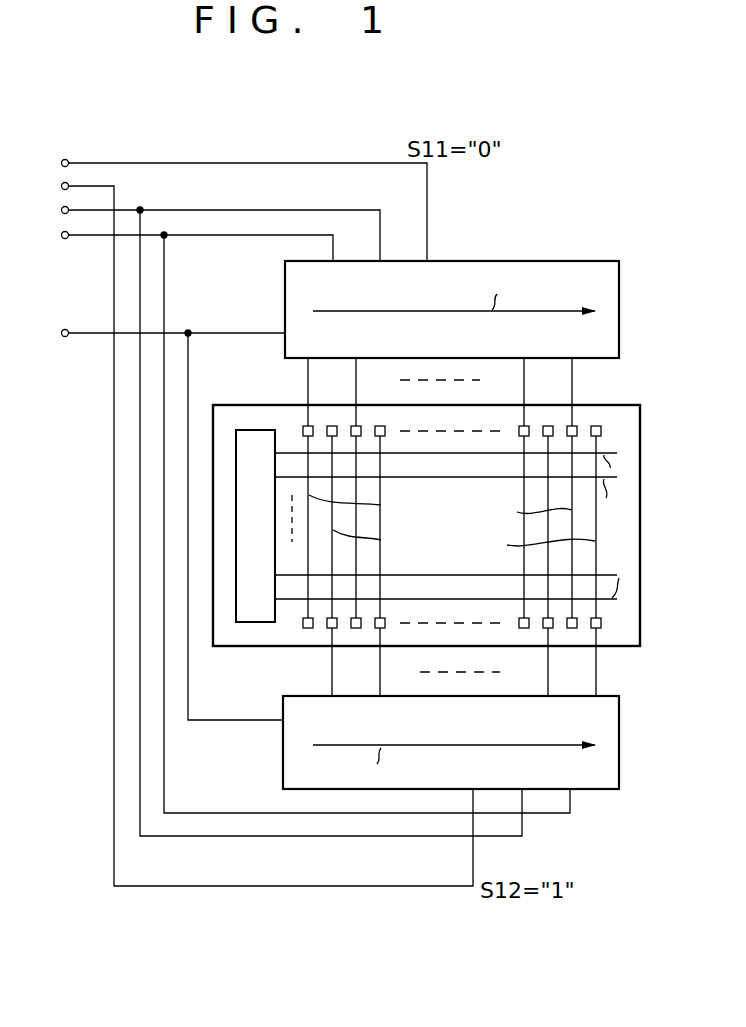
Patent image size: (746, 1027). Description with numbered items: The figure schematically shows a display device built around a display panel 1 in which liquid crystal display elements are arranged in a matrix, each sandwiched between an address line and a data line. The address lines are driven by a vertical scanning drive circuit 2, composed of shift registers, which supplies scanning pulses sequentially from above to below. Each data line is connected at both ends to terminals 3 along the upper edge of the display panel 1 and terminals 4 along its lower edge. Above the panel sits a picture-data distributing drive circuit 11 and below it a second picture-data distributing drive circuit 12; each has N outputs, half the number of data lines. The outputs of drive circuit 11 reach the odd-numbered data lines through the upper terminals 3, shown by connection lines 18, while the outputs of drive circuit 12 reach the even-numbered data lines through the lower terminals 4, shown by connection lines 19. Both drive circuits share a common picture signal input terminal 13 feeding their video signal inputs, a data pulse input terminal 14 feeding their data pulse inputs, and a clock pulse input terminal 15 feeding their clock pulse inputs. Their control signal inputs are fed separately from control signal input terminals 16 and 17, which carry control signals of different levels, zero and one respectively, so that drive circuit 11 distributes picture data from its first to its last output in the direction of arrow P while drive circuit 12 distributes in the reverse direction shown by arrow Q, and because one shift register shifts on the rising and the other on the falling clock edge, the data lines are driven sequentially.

The display panel 1 is at (443, 509).
The vertical scanning drive circuit 2 is at (252, 429).
The terminals 3 is at (603, 431).
The terminals 4 is at (603, 625).
The picture-data distributing drive circuit 11 is at (621, 306).
The picture-data distributing drive circuit 12 is at (621, 744).
The picture signal input terminal 13 is at (60, 332).
The data pulse input terminal 14 is at (60, 234).
The clock pulse input terminal 15 is at (60, 209).
The control signal input terminal 16 is at (60, 162).
The control signal input terminal 17 is at (60, 185).
The output lines of first shift register 18 is at (560, 384).
The output lines of second shift register 19 is at (585, 668).